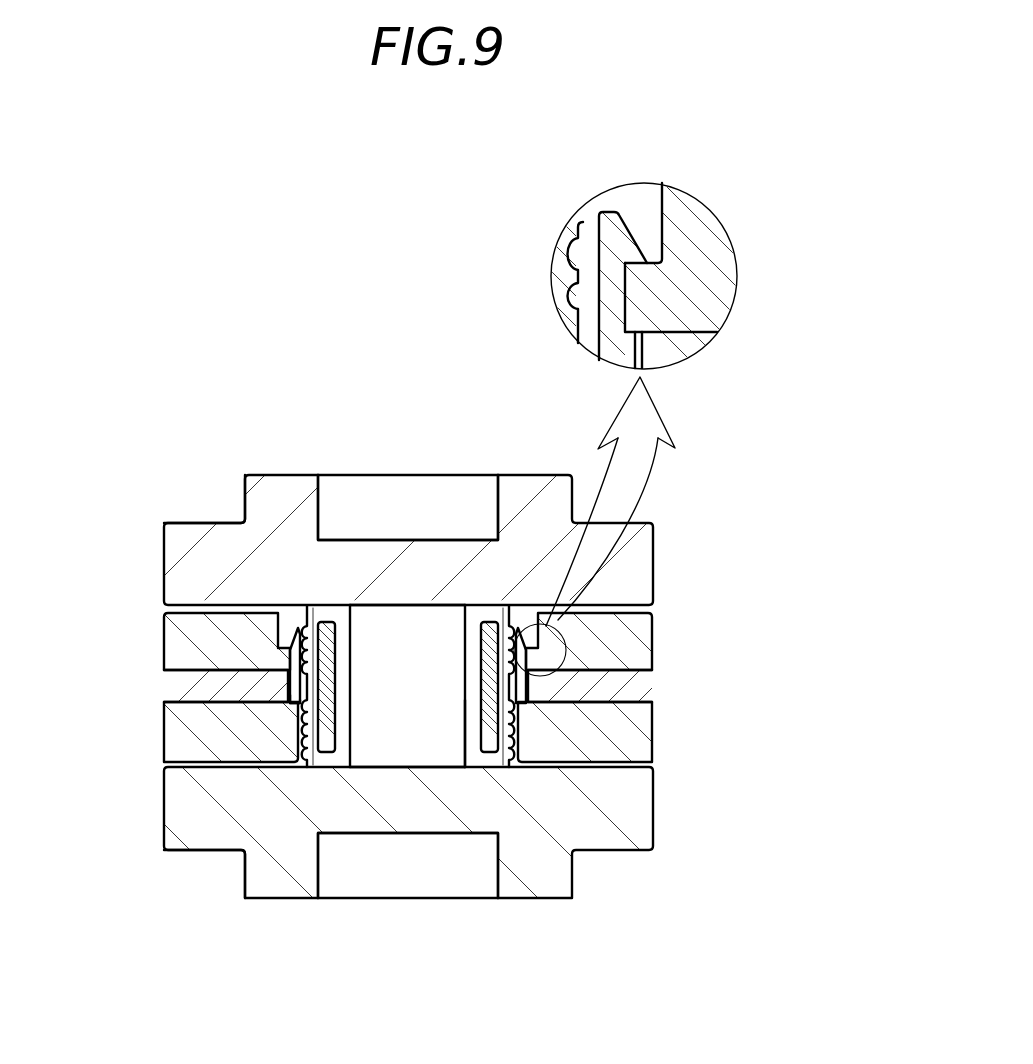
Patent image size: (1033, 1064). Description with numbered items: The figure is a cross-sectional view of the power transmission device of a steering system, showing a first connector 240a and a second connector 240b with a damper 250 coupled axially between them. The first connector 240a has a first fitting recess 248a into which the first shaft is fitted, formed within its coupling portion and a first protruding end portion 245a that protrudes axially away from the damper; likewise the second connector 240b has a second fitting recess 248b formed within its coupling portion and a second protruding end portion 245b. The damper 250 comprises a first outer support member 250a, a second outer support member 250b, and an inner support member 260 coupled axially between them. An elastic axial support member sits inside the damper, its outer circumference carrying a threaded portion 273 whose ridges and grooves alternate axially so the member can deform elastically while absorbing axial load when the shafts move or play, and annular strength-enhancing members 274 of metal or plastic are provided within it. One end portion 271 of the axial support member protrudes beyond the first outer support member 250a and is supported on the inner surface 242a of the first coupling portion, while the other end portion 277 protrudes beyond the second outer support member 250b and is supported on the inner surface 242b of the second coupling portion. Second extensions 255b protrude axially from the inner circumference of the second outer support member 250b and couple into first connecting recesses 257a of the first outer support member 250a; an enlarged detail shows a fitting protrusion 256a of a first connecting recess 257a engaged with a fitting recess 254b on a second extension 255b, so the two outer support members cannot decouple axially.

The first connector 240a is at (662, 512).
The second connector 240b is at (618, 868).
The first protruding end portion 245a is at (244, 499).
The second protruding end portion 245b is at (243, 880).
The first fitting recess 248a is at (397, 505).
The second fitting recess 248b is at (397, 865).
The inner surface of the first coupling portion 242a is at (415, 605).
The inner surface of the second coupling portion 242b is at (385, 768).
The one end portion of the axial support member 271 is at (510, 610).
The threaded portion 273 is at (283, 626).
The strength-enhancing member 274 is at (300, 728).
The other end portion of the axial support member 277 is at (458, 748).
The damper 250 is at (427, 695).
The first outer support member 250a is at (180, 643).
The second outer support member 250b is at (180, 726).
The inner support member 260 is at (180, 686).
The second extension 255b is at (527, 658).
The fitting recess 254b is at (618, 284).
The fitting protrusion 256a is at (633, 297).
The first connecting recess 257a is at (660, 221).